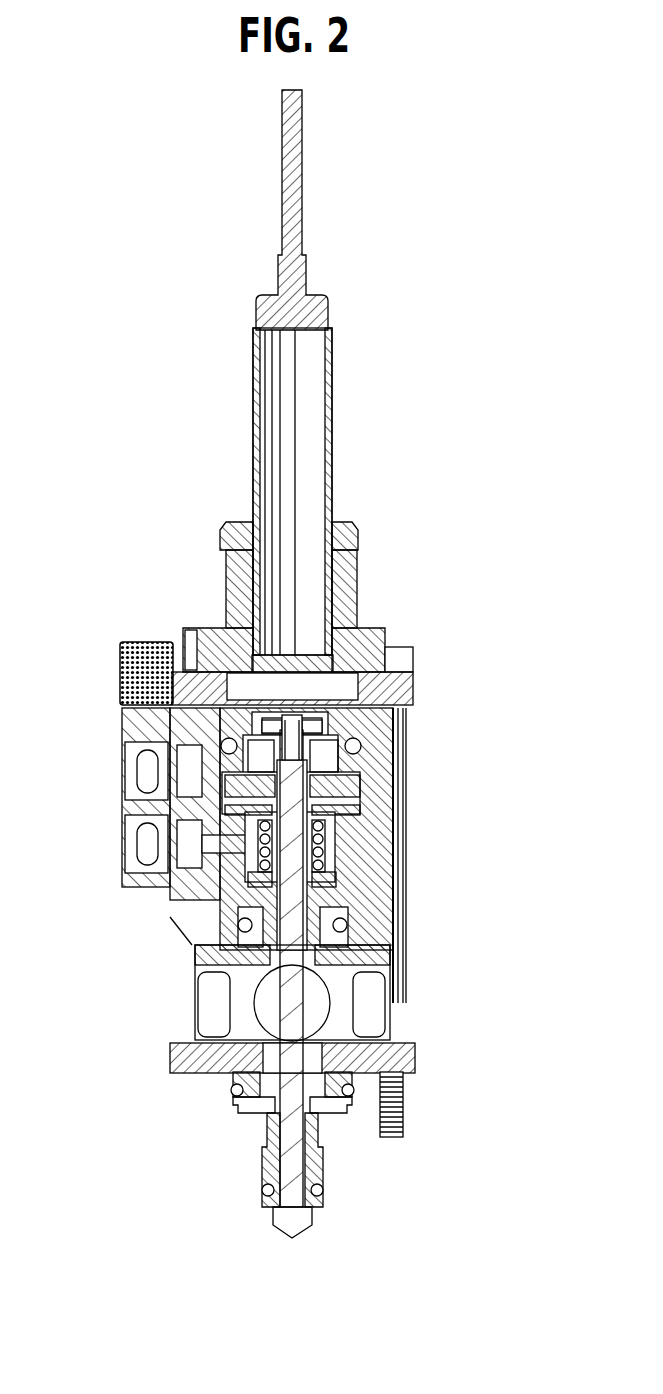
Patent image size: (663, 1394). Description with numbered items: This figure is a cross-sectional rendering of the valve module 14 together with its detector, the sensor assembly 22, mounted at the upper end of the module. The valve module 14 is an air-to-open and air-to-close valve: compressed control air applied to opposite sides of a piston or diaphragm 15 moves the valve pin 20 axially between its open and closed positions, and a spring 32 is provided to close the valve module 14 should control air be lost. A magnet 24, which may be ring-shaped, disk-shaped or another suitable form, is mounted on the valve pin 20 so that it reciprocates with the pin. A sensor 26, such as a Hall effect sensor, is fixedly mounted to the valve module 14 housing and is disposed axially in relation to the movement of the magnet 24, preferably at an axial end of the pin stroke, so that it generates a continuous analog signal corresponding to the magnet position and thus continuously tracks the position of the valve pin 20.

The valve module 14 is at (383, 510).
The sensor assembly 22 is at (213, 553).
The sensor 26 is at (327, 578).
The magnet 24 is at (317, 728).
The piston or diaphragm 15 is at (230, 790).
The valve pin 20 is at (293, 838).
The spring 32 is at (317, 867).